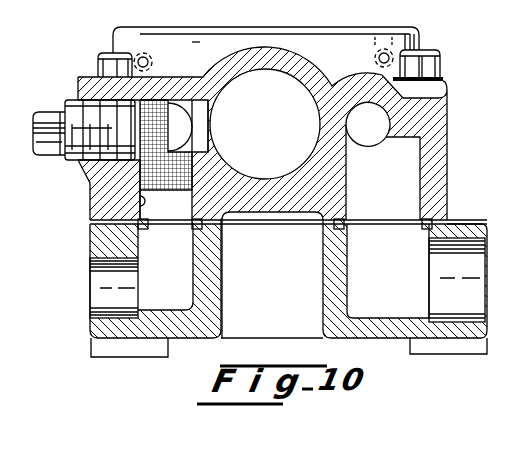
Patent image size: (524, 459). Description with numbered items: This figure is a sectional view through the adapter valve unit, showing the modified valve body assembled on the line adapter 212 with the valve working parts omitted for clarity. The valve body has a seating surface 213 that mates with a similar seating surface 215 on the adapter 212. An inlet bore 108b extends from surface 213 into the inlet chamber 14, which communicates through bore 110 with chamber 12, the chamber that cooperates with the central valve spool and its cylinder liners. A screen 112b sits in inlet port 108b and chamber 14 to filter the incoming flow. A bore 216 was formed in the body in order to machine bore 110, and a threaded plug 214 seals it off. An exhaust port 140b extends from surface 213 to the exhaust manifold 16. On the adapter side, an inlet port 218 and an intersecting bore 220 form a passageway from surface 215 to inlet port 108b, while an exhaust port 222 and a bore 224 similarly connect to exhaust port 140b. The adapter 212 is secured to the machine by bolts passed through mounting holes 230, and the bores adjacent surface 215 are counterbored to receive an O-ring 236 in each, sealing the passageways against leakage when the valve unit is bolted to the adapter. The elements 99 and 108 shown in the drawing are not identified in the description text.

The cover plate 99 is at (266, 26).
The bolt 108 is at (411, 22).
The mounting holes 230 is at (438, 58).
The exhaust port 140b is at (424, 201).
The chamber 12 is at (307, 88).
The exhaust manifold 16 is at (386, 135).
The bore 110 is at (211, 147).
The screen 112b is at (166, 160).
The inlet chamber 14 is at (173, 110).
The bore 216 is at (66, 116).
The threaded plug 214 is at (43, 158).
The inlet bore 108b is at (93, 210).
The line adapter 212 is at (82, 249).
The bore 220 is at (173, 295).
The inlet port 218 is at (96, 289).
The O-ring 236 is at (188, 229).
The seating surface 215 is at (224, 220).
The seating surface 213 is at (321, 222).
The bore 224 is at (399, 291).
The exhaust port 222 is at (472, 280).